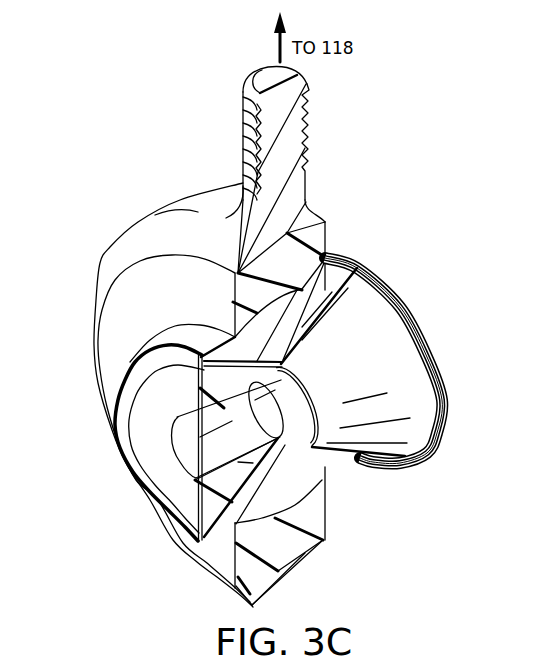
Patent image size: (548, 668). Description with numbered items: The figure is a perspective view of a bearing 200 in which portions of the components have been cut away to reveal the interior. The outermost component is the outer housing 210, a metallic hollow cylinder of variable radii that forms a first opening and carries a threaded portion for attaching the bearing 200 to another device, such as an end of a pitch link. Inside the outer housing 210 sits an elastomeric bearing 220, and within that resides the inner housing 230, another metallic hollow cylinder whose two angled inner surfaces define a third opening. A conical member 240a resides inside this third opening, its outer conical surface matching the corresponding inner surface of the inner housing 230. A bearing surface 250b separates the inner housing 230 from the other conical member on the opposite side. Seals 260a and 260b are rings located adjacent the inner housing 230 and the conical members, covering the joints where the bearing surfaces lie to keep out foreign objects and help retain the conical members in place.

The bearing 200 is at (155, 175).
The outer housing 210 is at (311, 183).
The elastomeric bearing 220 is at (327, 243).
The inner housing 230 is at (360, 254).
The conical member 240a is at (160, 475).
The bearing surface 250b is at (383, 322).
The seal 260a is at (119, 404).
The seal 260b is at (443, 398).